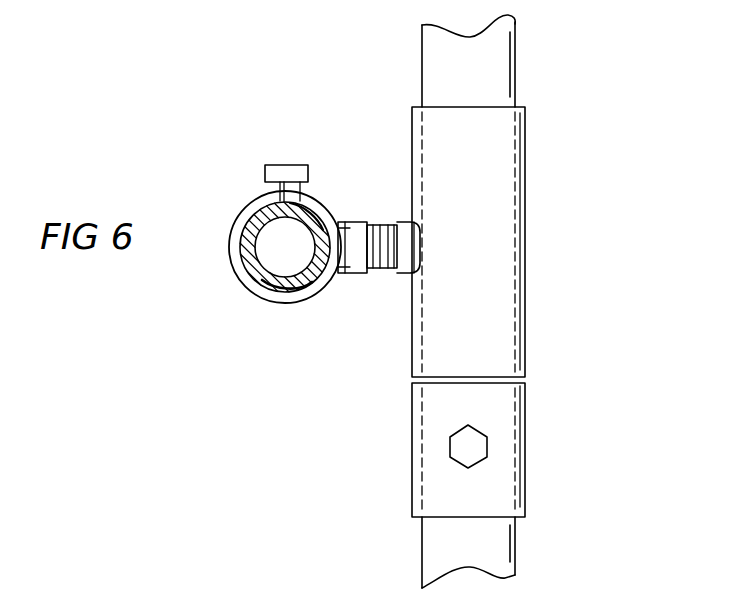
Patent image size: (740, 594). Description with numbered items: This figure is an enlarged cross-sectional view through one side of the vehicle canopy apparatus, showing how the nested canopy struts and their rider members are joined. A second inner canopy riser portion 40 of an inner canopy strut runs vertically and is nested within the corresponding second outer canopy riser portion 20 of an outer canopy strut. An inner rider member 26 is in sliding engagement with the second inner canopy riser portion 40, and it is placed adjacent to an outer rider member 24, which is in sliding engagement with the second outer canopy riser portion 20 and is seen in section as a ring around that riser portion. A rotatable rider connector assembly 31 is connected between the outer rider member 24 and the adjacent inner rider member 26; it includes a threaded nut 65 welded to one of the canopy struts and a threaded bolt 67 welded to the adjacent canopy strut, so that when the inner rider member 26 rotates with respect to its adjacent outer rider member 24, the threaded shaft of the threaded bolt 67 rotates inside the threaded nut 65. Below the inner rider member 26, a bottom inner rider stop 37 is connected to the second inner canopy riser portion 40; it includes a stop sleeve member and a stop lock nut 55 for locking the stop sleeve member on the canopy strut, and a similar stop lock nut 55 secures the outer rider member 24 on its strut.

The second outer canopy riser portion 20 is at (258, 237).
The outer rider member 24 is at (245, 205).
The inner rider member 26 is at (478, 218).
The rotatable rider connector assembly 31 is at (375, 285).
The bottom inner rider stop 37 is at (488, 403).
The second inner canopy riser portion 40 is at (482, 73).
The stop lock nut 55 is at (473, 450).
The threaded nut 65 is at (352, 223).
The threaded bolt 67 is at (402, 213).